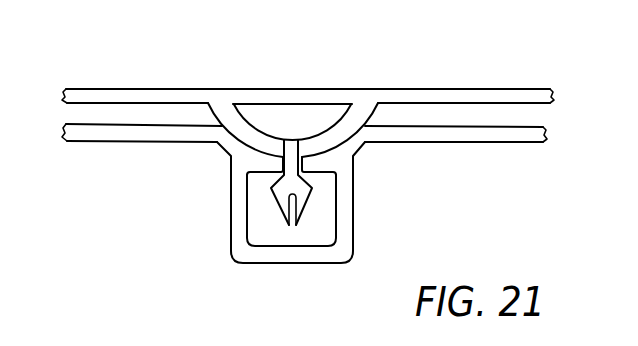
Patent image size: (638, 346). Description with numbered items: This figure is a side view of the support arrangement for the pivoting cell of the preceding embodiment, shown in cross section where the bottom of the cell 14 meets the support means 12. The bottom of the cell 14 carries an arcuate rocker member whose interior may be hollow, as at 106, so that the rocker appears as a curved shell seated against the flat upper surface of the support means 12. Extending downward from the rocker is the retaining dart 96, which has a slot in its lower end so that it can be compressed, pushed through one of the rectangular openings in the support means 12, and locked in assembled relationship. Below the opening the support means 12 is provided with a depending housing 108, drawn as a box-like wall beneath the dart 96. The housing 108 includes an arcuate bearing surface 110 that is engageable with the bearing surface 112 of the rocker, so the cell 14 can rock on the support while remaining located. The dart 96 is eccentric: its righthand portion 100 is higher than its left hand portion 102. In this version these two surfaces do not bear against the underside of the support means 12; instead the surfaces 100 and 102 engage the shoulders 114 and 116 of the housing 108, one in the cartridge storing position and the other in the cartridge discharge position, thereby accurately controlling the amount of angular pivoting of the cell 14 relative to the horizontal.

The support means 12 is at (495, 152).
The cell 14 is at (483, 85).
The retaining dart 96 is at (299, 200).
The righthand portion 100 is at (300, 158).
The left hand portion 102 is at (270, 190).
The hollow 106 is at (250, 130).
The depending housing 108 is at (353, 212).
The arcuate bearing surface 110 is at (348, 132).
The bearing surface 112 is at (248, 144).
The shoulder 114 is at (278, 174).
The shoulder 116 is at (313, 180).